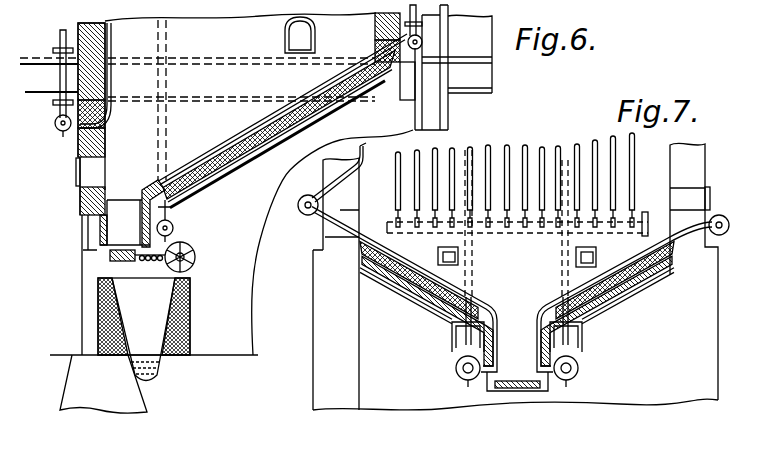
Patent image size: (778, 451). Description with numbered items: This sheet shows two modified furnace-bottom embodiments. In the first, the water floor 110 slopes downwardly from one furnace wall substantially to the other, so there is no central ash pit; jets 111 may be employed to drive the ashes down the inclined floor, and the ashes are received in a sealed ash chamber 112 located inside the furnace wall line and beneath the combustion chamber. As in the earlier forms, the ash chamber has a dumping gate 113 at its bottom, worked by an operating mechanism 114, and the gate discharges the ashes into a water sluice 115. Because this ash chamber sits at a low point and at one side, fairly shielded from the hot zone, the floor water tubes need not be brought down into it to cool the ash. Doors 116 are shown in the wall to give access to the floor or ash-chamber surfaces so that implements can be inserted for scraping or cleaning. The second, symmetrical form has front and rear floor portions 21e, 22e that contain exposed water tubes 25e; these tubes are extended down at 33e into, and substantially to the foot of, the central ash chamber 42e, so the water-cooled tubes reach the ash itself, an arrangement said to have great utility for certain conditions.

In FIG. 6, the water floor 110 is at (234, 137).
In FIG. 6, the jets 111 is at (374, 52).
In FIG. 6, the sealed ash chamber 112 is at (136, 213).
In FIG. 6, the dumping gate 113 is at (125, 262).
In FIG. 6, the operating mechanism 114 is at (200, 248).
In FIG. 6, the water sluice 115 is at (144, 329).
In FIG. 6, the doors 116 is at (75, 170).
In FIG. 7, the front floor portion 21e is at (405, 284).
In FIG. 7, the rear floor portion 22e is at (622, 280).
In FIG. 7, the exposed water tubes 25e is at (458, 290).
In FIG. 7, the downward tube extensions 33e is at (534, 343).
In FIG. 7, the ash chamber 42e is at (517, 374).